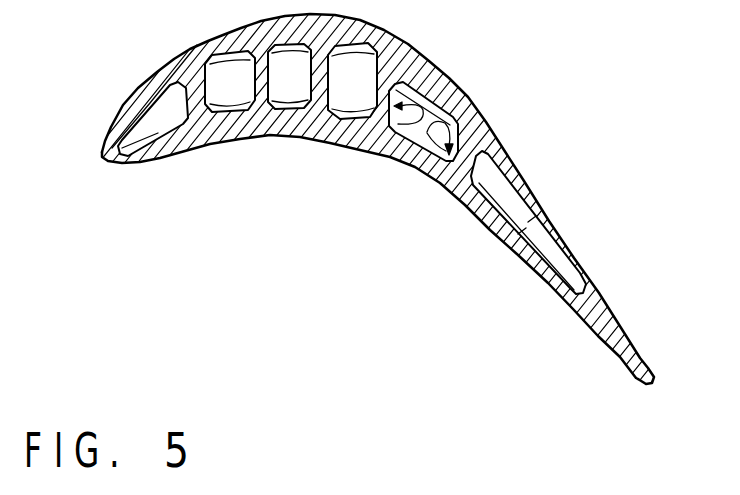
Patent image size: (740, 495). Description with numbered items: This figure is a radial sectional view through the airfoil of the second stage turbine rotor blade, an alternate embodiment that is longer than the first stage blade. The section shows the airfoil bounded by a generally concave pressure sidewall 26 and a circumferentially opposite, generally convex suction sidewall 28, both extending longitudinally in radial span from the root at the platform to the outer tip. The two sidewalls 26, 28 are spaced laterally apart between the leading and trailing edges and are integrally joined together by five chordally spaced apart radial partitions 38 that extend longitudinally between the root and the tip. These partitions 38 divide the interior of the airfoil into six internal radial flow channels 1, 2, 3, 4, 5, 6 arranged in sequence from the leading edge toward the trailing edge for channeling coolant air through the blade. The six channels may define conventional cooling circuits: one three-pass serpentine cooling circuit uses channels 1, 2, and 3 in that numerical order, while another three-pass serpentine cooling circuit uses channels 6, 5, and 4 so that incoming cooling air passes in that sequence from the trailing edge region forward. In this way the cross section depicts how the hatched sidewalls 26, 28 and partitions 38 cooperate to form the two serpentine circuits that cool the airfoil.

The first radial flow channel 1 is at (176, 121).
The second radial flow channel 2 is at (230, 81).
The third radial flow channel 3 is at (298, 95).
The fourth radial flow channel 4 is at (365, 100).
The fifth radial flow channel 5 is at (430, 103).
The sixth radial flow channel 6 is at (490, 187).
The pressure sidewall 26 is at (292, 143).
The suction sidewall 28 is at (385, 40).
The radial partition 38 is at (202, 59).